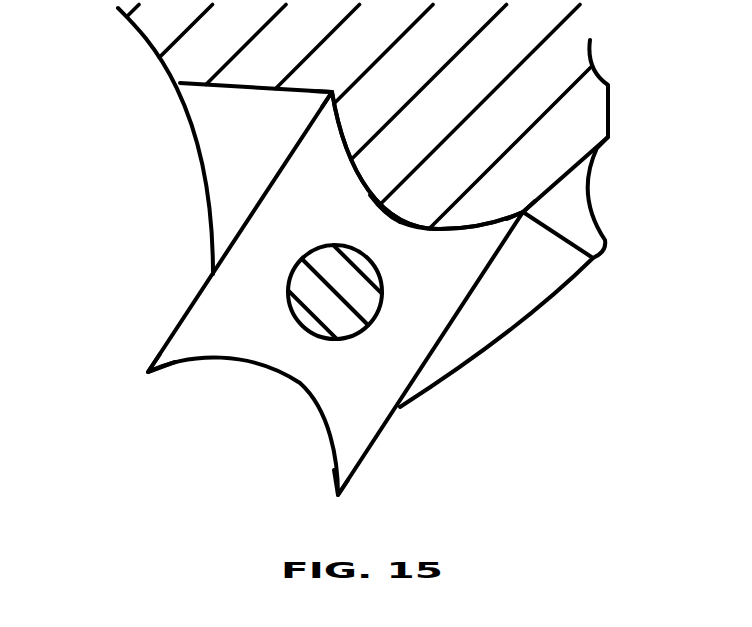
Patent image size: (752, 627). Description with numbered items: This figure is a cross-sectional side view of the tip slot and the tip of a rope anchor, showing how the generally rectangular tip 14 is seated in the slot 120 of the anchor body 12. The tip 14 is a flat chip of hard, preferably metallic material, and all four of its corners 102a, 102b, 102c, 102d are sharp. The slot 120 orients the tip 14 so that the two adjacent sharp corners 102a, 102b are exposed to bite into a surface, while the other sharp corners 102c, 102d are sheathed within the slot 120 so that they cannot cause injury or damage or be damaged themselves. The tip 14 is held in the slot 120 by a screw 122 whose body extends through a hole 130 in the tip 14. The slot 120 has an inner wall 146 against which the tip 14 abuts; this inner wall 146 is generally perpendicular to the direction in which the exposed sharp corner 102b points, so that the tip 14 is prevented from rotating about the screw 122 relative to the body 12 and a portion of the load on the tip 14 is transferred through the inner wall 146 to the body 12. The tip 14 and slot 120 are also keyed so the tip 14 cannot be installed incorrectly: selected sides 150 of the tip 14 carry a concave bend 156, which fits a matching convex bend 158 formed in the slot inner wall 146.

The body 12 is at (609, 110).
The tip 14 is at (382, 437).
The corner 102a is at (335, 494).
The corner 102b is at (147, 373).
The corner 102c is at (328, 93).
The corner 102d is at (527, 214).
The slot 120 is at (222, 174).
The screw 122 is at (287, 292).
The hole 130 is at (370, 300).
The inner wall 146 is at (462, 224).
The sides 150 is at (419, 231).
The concave bend 156 is at (383, 214).
The convex bend 158 is at (386, 208).